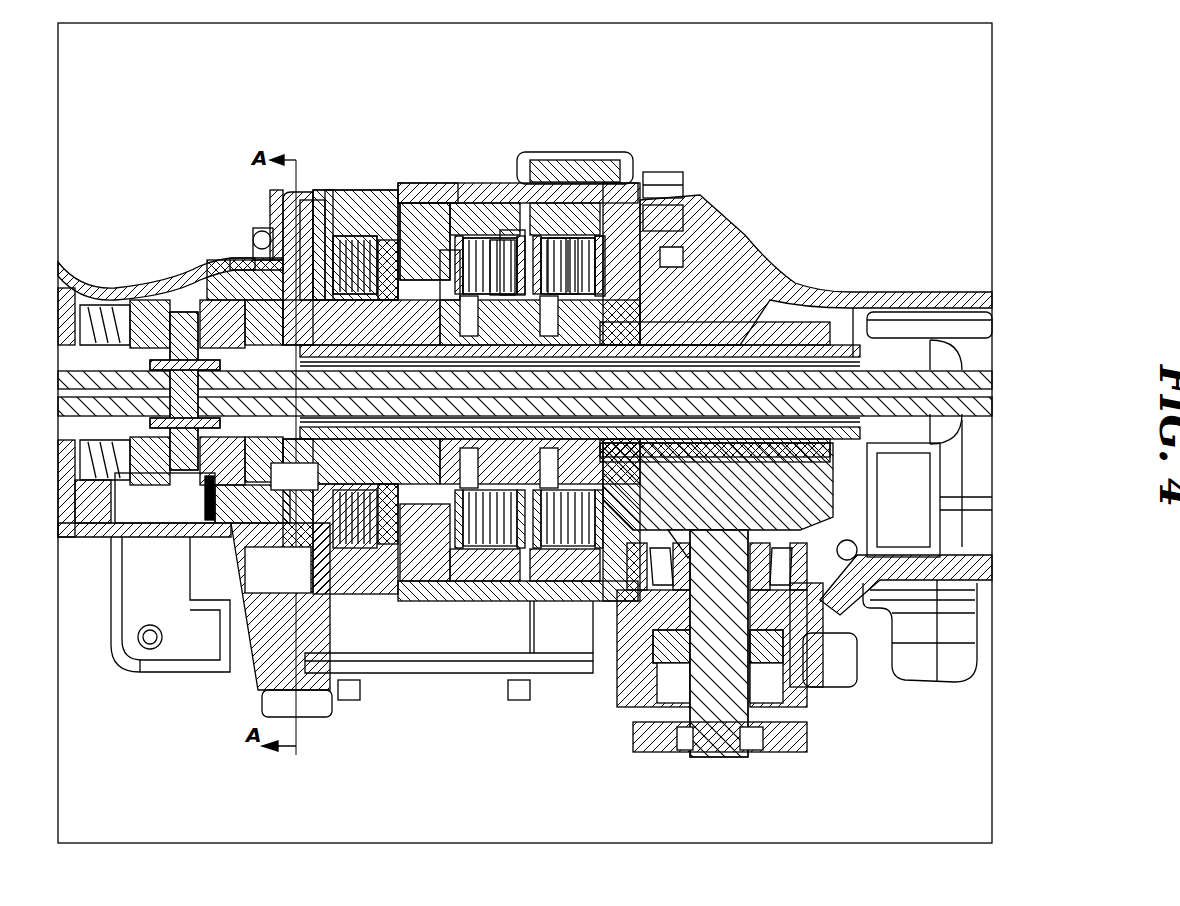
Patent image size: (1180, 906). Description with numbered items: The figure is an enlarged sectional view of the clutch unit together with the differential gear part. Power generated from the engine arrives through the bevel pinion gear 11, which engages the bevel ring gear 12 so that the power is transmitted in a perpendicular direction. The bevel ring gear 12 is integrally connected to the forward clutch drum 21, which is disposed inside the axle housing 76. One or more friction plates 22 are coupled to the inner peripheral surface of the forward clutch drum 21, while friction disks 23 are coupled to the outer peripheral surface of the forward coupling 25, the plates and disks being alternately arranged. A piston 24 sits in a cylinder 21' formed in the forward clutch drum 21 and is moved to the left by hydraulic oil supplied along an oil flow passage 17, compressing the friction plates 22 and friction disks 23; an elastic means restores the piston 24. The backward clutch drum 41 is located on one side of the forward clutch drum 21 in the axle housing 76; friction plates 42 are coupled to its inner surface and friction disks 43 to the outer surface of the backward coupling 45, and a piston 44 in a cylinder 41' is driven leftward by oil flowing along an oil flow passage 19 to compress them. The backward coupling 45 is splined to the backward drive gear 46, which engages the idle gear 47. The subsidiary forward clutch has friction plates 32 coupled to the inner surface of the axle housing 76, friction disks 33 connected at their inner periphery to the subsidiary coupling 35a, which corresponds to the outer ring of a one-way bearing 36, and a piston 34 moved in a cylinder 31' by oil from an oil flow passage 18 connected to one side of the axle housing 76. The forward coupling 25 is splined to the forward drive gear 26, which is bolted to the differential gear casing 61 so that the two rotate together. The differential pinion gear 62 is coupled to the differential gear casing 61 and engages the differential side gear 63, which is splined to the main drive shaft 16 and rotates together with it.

The bevel pinion gear 11 is at (767, 493).
The bevel ring gear 12 is at (633, 293).
The main drive shaft 16 is at (77, 288).
The oil flow passage 17 is at (600, 560).
The oil flow passage 18 is at (262, 232).
The oil flow passage 19 is at (592, 245).
The forward clutch drum 21 is at (590, 181).
The cylinder 21' is at (642, 215).
The friction plates 22 is at (548, 237).
The friction disks 23 is at (557, 240).
The piston 24 is at (600, 255).
The forward coupling 25 is at (575, 240).
The forward drive gear 26 is at (222, 292).
The cylinder 31' is at (355, 217).
The friction plates 32 is at (278, 247).
The friction disks 33 is at (318, 222).
The piston 34 is at (347, 205).
The subsidiary coupling 35a is at (262, 257).
The one-way bearing 36 is at (268, 300).
The backward clutch drum 41 is at (469, 206).
The cylinder 41' is at (500, 196).
The friction plates 42 is at (425, 232).
The friction disks 43 is at (445, 265).
The piston 44 is at (508, 250).
The backward coupling 45 is at (430, 195).
The backward drive gear 46 is at (242, 258).
The idle gear 47 is at (258, 653).
The differential gear casing 61 is at (195, 305).
The differential pinion gear 62 is at (148, 295).
The differential side gear 63 is at (127, 305).
The axle housing 76 is at (333, 190).